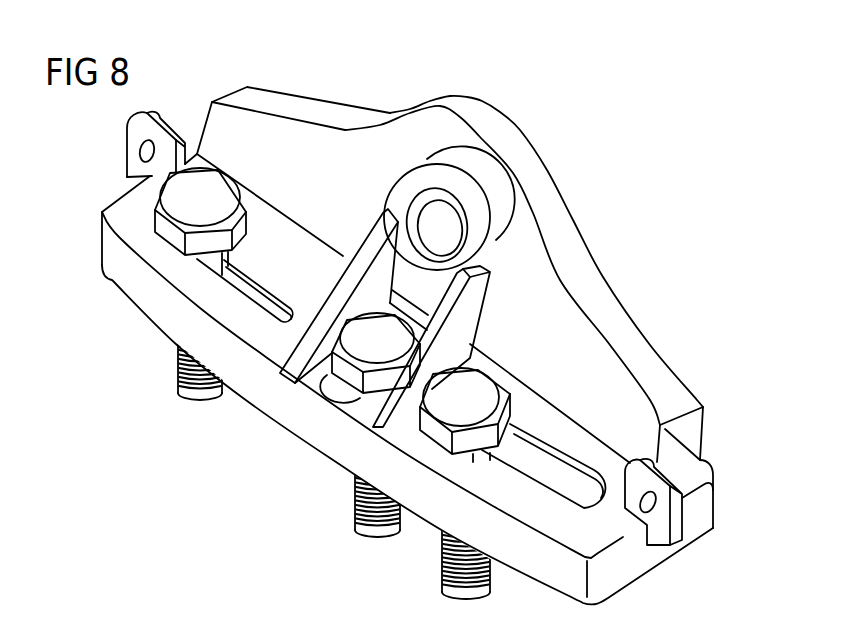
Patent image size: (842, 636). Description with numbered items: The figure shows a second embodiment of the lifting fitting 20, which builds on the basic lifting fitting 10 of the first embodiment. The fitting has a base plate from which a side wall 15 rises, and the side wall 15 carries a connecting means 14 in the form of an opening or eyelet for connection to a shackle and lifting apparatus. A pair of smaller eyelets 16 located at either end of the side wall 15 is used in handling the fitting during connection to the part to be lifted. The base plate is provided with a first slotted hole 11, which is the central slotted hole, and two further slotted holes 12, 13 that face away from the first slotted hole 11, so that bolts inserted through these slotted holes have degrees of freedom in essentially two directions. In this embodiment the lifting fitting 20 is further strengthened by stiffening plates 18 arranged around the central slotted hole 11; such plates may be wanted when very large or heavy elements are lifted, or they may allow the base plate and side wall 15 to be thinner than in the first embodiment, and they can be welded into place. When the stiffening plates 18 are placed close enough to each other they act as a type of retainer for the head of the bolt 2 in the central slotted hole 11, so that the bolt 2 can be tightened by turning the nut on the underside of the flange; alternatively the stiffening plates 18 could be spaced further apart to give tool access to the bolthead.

The bolt 2 is at (173, 373).
The lifting fitting 10 is at (108, 243).
The first slotted hole 11 is at (287, 427).
The slotted hole 12 is at (258, 272).
The slotted hole 13 is at (560, 467).
The connecting means 14 is at (428, 207).
The side wall 15 is at (588, 290).
The eyelet 16 is at (677, 518).
The stiffening plate 18 is at (263, 382).
The lifting fitting 20 is at (171, 465).